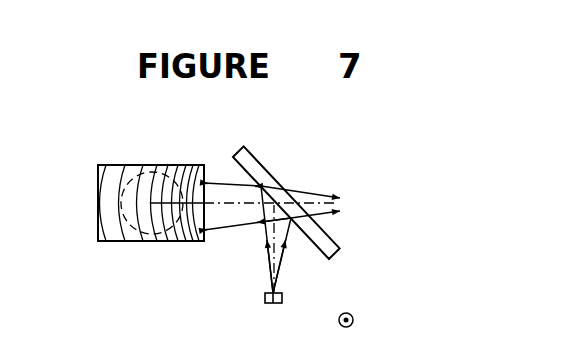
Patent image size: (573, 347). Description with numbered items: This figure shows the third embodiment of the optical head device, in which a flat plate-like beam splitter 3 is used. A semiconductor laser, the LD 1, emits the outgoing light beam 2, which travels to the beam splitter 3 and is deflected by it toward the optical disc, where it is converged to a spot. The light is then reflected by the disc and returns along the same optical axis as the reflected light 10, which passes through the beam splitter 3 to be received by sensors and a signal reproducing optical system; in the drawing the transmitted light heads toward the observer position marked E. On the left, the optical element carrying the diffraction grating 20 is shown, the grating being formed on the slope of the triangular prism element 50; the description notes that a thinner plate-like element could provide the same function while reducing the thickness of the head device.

The semiconductor laser 1 is at (262, 306).
The outgoing beam 2 is at (271, 269).
The beam splitter 3 is at (267, 168).
The reflected light 10 is at (313, 193).
The diffraction grating 20 is at (113, 230).
The triangular prism element 50 is at (162, 240).
The eye of observer E is at (357, 322).